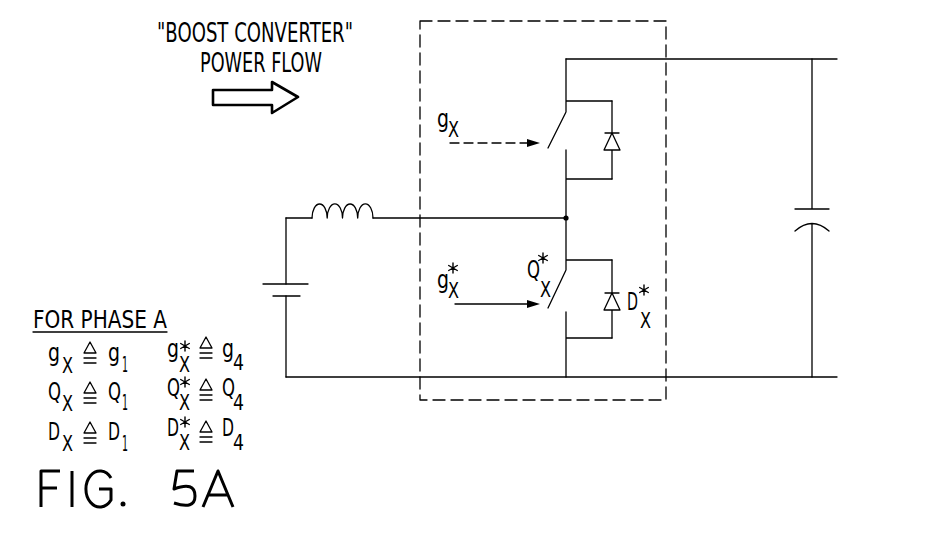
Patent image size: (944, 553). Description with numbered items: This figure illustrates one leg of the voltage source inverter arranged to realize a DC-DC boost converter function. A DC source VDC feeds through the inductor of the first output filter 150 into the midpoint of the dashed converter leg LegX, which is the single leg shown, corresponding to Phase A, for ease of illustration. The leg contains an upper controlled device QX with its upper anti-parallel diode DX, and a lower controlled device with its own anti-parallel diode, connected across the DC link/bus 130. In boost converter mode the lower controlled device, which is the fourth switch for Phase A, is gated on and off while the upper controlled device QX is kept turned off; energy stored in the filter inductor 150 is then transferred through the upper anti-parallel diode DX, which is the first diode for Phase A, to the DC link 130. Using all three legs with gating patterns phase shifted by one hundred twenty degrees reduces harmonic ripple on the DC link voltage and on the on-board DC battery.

The first output filter 150 is at (325, 192).
The DC link/bus 130 is at (822, 208).
The DC voltage source VDC is at (308, 292).
The upper switch of leg X QX is at (569, 138).
The upper anti-parallel diode of leg X DX is at (627, 140).
The converter leg X LegX is at (670, 33).